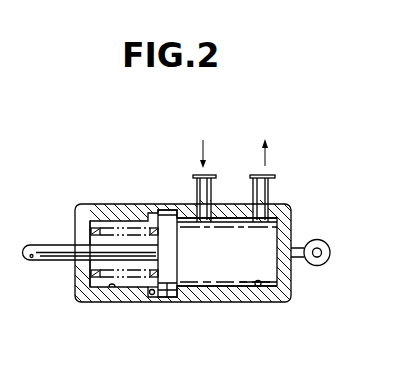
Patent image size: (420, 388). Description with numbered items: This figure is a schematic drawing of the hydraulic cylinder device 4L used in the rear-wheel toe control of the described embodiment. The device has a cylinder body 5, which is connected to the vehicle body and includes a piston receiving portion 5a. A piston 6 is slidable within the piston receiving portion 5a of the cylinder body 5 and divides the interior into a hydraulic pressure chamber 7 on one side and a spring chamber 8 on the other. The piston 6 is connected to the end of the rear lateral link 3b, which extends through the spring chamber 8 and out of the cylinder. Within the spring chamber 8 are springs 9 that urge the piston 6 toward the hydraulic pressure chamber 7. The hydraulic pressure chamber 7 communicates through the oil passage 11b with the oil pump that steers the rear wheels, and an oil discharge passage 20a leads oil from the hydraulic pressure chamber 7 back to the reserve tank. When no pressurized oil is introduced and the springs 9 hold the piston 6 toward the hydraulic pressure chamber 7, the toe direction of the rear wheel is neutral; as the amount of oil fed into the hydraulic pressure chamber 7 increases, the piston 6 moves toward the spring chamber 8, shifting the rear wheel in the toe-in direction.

The hydraulic cylinder device 4L is at (113, 188).
The springs 9 is at (75, 222).
The rear lateral link 3b is at (46, 262).
The spring chamber 8 is at (111, 290).
The piston receiving portion 5a is at (151, 295).
The piston 6 is at (173, 286).
The cylinder body 5 is at (213, 303).
The hydraulic pressure chamber 7 is at (259, 287).
The oil passage 11b is at (197, 180).
The oil discharge passage 20a is at (268, 184).